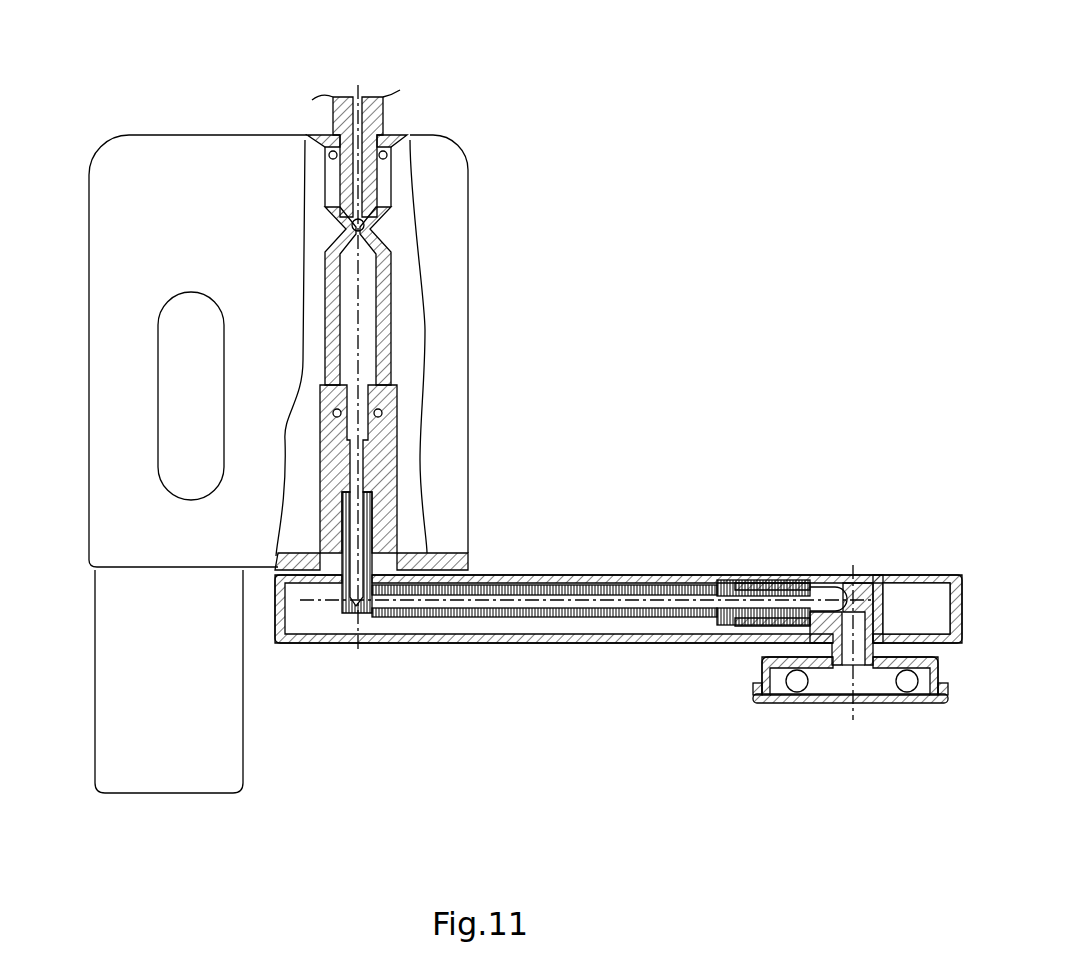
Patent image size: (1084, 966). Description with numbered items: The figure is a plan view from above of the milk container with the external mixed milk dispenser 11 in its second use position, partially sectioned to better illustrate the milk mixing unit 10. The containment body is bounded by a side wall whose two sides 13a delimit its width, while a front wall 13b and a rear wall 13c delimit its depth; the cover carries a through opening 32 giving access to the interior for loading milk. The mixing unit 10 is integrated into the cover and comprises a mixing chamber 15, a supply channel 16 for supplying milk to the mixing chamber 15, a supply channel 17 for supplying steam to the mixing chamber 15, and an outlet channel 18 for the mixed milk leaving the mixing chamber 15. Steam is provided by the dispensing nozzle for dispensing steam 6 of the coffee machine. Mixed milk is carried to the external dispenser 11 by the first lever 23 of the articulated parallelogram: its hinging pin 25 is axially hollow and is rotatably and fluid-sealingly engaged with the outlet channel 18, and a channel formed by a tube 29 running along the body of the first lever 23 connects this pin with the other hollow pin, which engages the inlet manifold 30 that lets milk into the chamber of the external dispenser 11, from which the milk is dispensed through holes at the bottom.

The side 13a is at (88, 230).
The front wall 13b is at (264, 570).
The rear wall 13c is at (247, 135).
The dispensing nozzle for dispensing steam 6 is at (388, 120).
The supply channel 17 is at (387, 195).
The supply channel 16 is at (370, 225).
The mixing chamber 15 is at (350, 228).
The through opening 32 is at (193, 332).
The milk mixing unit 10 is at (335, 297).
The outlet channel 18 is at (345, 340).
The hinging pin 25 is at (332, 455).
The tube 29 is at (568, 587).
The first lever 23 is at (452, 643).
The inlet manifold 30 is at (856, 655).
The external mixed milk dispenser 11 is at (852, 745).